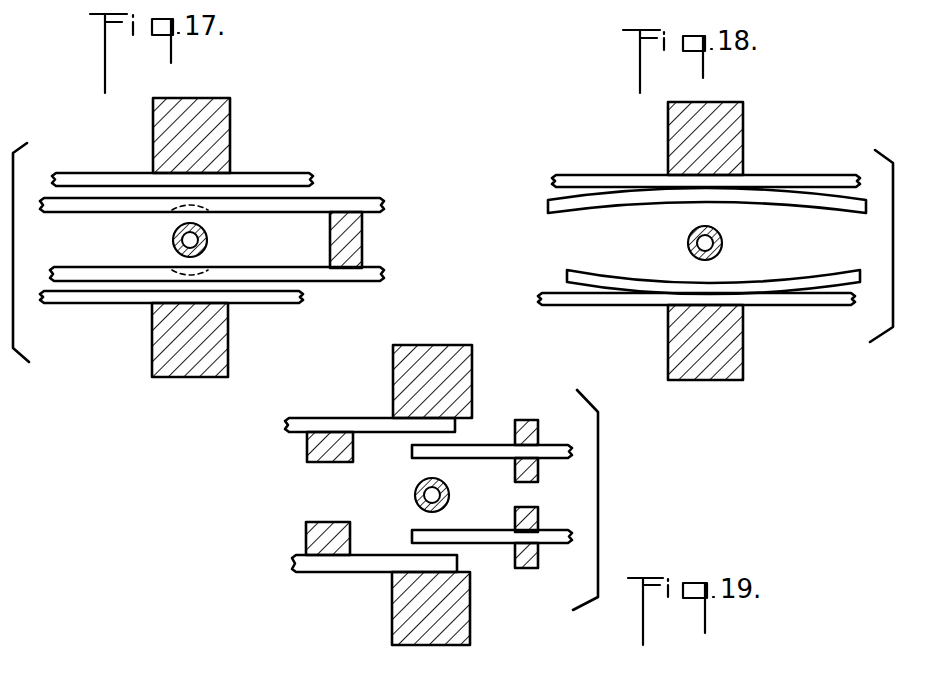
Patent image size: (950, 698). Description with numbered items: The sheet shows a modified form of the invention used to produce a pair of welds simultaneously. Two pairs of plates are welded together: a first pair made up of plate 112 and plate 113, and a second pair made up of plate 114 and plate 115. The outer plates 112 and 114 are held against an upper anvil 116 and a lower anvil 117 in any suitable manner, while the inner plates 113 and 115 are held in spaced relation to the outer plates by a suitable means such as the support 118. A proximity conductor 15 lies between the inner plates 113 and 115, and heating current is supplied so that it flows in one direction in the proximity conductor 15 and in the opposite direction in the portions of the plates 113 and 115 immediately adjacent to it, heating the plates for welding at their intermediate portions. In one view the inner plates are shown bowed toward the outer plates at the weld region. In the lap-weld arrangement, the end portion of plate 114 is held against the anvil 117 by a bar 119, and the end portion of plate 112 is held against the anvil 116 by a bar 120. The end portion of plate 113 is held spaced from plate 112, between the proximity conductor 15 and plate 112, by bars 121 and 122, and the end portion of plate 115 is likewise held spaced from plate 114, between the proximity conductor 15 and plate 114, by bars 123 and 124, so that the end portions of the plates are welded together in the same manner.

In FIG. 17, the proximity conductor 15 is at (190, 240).
In FIG. 18, the proximity conductor 15 is at (720, 242).
In FIG. 19, the proximity conductor 15 is at (418, 487).
In FIG. 17, the plate 112 is at (90, 174).
In FIG. 18, the plate 112 is at (829, 183).
In FIG. 19, the plate 112 is at (343, 425).
In FIG. 17, the plate 113 is at (85, 205).
In FIG. 18, the plate 113 is at (822, 203).
In FIG. 19, the plate 113 is at (486, 448).
In FIG. 17, the plate 114 is at (272, 300).
In FIG. 18, the plate 114 is at (812, 310).
In FIG. 19, the plate 114 is at (338, 566).
In FIG. 17, the plate 115 is at (318, 275).
In FIG. 18, the plate 115 is at (819, 278).
In FIG. 19, the plate 115 is at (440, 530).
In FIG. 17, the anvil 116 is at (221, 136).
In FIG. 18, the anvil 116 is at (738, 140).
In FIG. 19, the anvil 116 is at (463, 367).
In FIG. 17, the anvil 117 is at (213, 350).
In FIG. 18, the anvil 117 is at (745, 370).
In FIG. 19, the anvil 117 is at (460, 625).
In FIG. 17, the support 118 is at (355, 233).
In FIG. 19, the bar 119 is at (310, 530).
In FIG. 19, the bar 120 is at (307, 458).
In FIG. 19, the bar 121 is at (530, 420).
In FIG. 19, the bar 122 is at (523, 470).
In FIG. 19, the bar 123 is at (520, 518).
In FIG. 19, the bar 124 is at (532, 570).